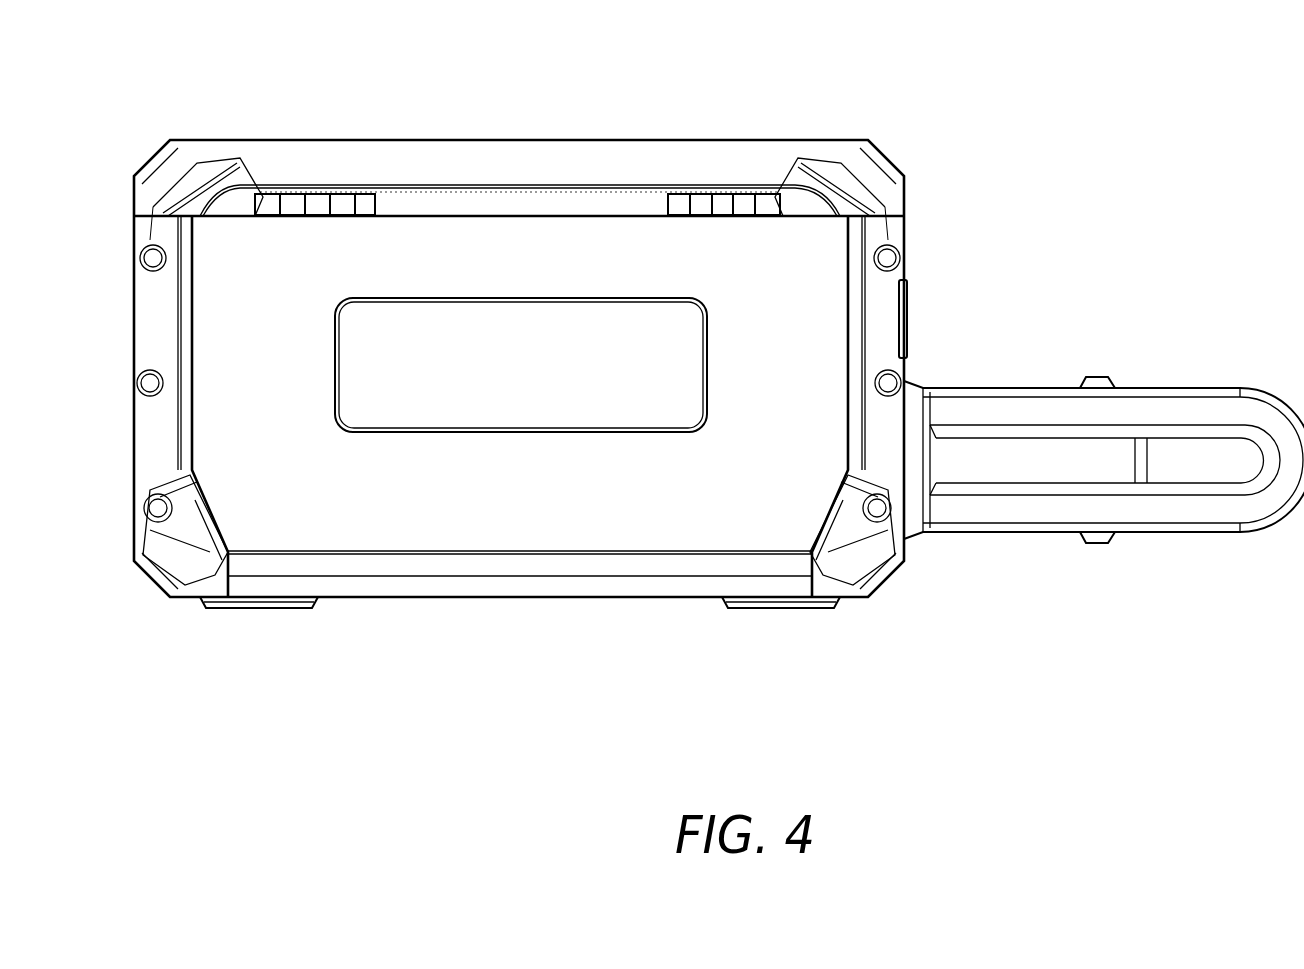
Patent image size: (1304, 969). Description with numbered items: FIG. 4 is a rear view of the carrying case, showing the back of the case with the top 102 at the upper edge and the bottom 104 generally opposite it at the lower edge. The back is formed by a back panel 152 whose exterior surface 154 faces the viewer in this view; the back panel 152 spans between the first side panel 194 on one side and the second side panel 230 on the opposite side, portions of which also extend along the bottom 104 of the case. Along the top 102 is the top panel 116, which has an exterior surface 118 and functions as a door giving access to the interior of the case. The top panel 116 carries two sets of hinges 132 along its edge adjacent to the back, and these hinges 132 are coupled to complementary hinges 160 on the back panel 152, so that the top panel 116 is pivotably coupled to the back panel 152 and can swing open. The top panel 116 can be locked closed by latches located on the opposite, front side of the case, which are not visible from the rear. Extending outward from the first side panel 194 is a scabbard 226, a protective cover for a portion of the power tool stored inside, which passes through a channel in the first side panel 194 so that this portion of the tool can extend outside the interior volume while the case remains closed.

The top 102 is at (450, 132).
The bottom 104 is at (508, 612).
The top panel 116 is at (632, 152).
The exterior surface 118 is at (548, 178).
The hinges 132 is at (305, 180).
The back panel 152 is at (305, 512).
The exterior surface 154 is at (546, 498).
The hinges 160 is at (296, 222).
The first side panel 194 is at (882, 329).
The scabbard 226 is at (1158, 386).
The second side panel 230 is at (152, 325).